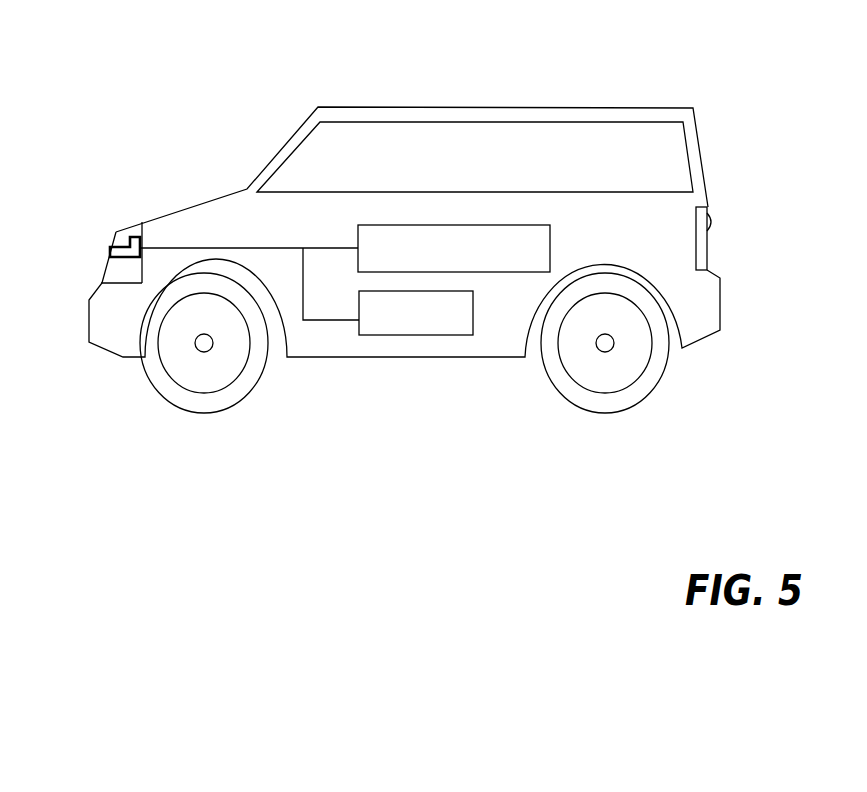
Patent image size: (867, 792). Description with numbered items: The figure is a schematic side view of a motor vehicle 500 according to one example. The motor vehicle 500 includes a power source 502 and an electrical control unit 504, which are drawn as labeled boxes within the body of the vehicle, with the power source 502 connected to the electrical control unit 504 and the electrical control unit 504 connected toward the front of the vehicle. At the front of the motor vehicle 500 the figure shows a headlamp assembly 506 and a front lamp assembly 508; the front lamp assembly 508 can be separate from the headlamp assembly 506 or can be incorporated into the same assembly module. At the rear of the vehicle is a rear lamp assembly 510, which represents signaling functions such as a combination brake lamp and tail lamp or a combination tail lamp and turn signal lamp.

The motor vehicle 500 is at (130, 47).
The power source 502 is at (393, 335).
The electrical control unit 504 is at (504, 225).
The headlamp assembly 506 is at (110, 247).
The front lamp assembly 508 is at (70, 275).
The rear lamp assembly 510 is at (708, 212).